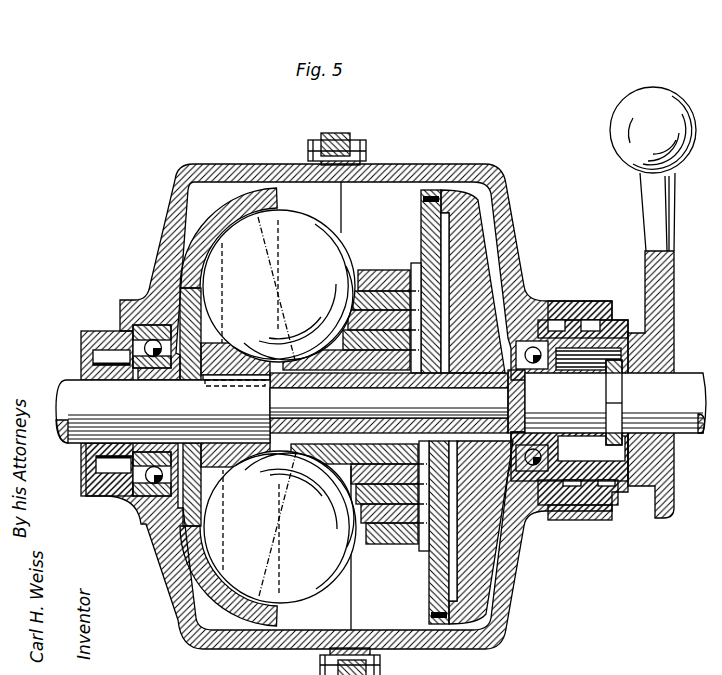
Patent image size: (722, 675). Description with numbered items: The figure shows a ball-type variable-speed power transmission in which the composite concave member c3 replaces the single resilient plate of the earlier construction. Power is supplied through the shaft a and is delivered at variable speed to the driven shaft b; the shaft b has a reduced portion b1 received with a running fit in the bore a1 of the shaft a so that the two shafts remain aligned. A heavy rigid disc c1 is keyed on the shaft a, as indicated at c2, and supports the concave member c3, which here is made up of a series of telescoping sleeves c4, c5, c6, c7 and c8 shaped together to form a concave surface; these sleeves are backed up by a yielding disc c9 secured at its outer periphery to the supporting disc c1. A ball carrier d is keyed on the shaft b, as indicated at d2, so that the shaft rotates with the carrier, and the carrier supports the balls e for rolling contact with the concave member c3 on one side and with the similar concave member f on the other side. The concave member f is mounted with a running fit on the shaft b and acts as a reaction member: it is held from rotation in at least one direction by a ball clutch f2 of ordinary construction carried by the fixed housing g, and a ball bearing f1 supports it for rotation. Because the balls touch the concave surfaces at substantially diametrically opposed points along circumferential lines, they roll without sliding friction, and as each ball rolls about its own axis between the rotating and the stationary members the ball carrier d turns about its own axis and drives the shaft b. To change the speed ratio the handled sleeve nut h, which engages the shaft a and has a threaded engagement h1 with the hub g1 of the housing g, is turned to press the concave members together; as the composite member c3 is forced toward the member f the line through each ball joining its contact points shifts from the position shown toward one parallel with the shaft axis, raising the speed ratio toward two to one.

The shaft a is at (615, 396).
The bore a1 is at (512, 396).
The shaft b is at (163, 411).
The reduced portion b1 is at (389, 402).
The rigid disc c1 is at (465, 287).
The key c2 is at (389, 403).
The concave member c3 is at (359, 216).
The telescoping sleeve c4 is at (356, 407).
The telescoping sleeve c5 is at (380, 405).
The telescoping sleeve c6 is at (383, 405).
The telescoping sleeve c7 is at (385, 405).
The telescoping sleeve c8 is at (388, 406).
The yielding disc c9 is at (408, 256).
The ball carrier d is at (220, 347).
The key d2 is at (234, 375).
The ball e is at (279, 406).
The concave member f is at (209, 205).
The ball bearing f1 is at (130, 318).
The ball clutch f2 is at (72, 334).
The housing g is at (156, 208).
The hub g1 is at (553, 296).
The handled sleeve nut h is at (609, 318).
The threaded engagement h1 is at (577, 312).